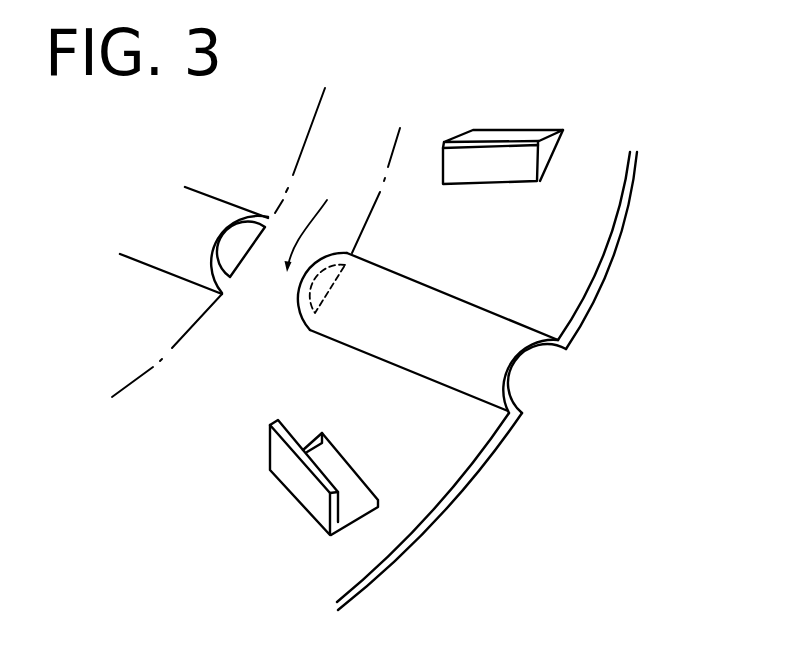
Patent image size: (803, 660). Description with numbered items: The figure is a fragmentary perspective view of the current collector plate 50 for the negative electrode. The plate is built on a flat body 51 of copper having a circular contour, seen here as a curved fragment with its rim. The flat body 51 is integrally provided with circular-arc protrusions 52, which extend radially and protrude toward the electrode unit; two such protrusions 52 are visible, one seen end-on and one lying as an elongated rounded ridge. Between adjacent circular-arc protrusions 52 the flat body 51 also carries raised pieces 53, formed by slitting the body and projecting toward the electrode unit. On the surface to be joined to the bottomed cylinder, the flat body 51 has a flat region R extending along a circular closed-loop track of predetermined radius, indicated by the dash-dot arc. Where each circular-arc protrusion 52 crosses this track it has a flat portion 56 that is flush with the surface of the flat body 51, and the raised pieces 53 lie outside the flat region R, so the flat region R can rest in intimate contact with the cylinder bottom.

The current collector plate 50 is at (582, 220).
The flat body 51 is at (558, 287).
The circular-arc protrusion 52 is at (202, 202).
The raised piece 53 is at (505, 145).
The flat portion 56 is at (314, 217).
The flat region R is at (165, 349).